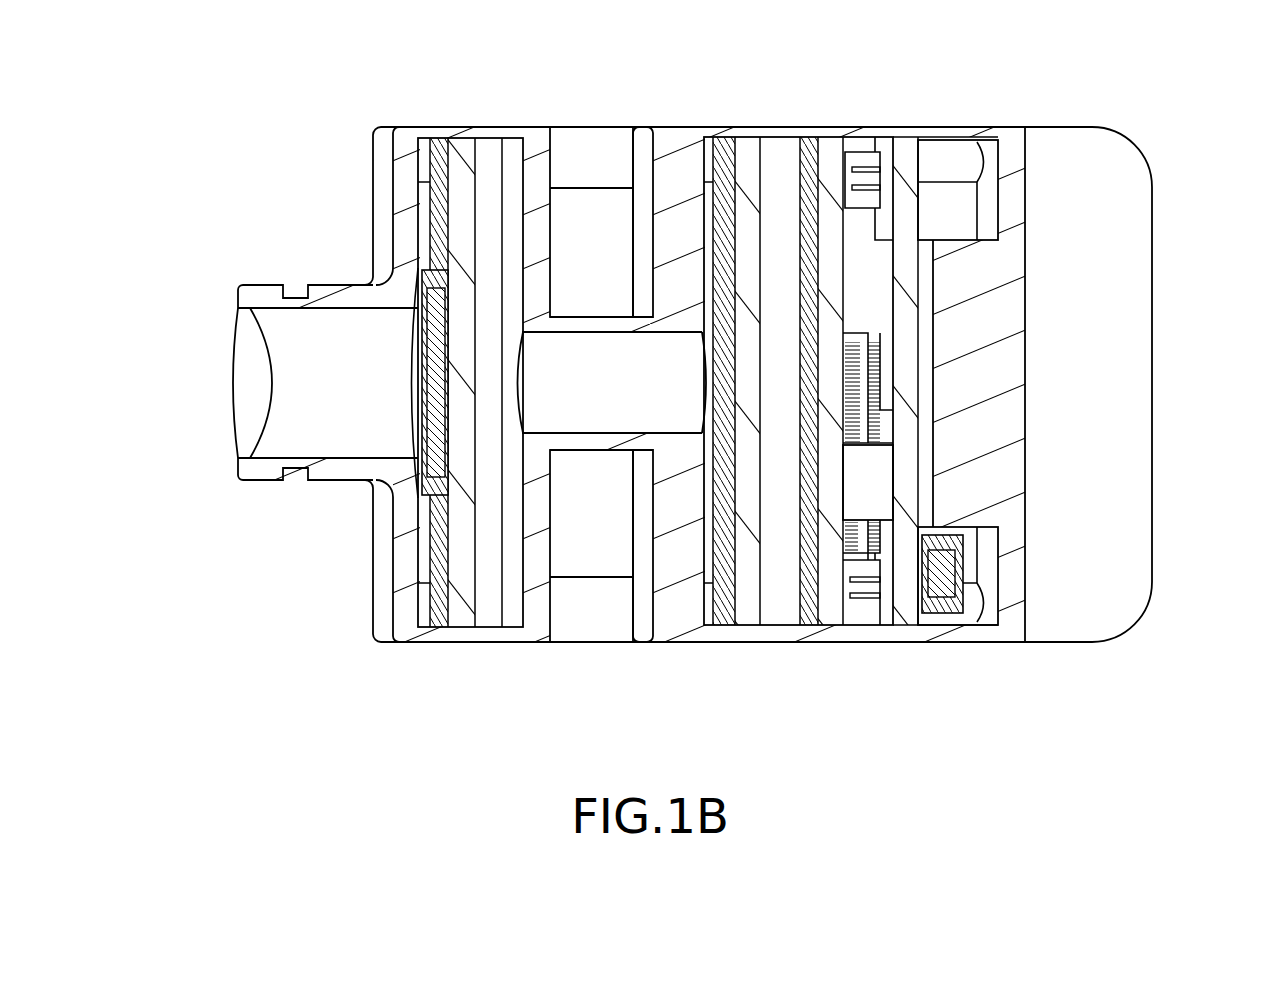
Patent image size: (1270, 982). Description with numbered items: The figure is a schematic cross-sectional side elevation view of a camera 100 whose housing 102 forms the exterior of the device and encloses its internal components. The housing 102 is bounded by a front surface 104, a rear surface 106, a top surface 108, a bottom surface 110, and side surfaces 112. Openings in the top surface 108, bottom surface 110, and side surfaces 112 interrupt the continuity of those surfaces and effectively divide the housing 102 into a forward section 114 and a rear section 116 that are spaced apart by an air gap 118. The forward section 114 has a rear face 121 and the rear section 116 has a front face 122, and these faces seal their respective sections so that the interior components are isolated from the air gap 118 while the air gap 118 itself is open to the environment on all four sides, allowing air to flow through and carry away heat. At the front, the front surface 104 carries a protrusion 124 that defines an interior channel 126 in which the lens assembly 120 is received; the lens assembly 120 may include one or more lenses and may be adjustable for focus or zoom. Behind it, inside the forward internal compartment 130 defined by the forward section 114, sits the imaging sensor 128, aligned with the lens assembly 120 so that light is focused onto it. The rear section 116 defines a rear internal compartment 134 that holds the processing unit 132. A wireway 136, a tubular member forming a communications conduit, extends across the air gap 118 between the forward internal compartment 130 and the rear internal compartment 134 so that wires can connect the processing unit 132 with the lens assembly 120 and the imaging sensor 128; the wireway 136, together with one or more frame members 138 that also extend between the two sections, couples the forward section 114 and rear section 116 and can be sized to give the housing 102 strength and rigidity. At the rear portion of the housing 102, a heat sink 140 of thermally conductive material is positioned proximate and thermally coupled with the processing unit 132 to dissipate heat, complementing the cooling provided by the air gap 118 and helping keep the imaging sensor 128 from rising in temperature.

The camera 100 is at (701, 396).
The housing 102 is at (726, 668).
The front surface 104 is at (372, 540).
The rear surface 106 is at (1153, 322).
The top surface 108 is at (758, 133).
The bottom surface 110 is at (475, 632).
The side surfaces 112 is at (1059, 148).
The forward section 114 is at (508, 676).
The rear section 116 is at (960, 685).
The air gap 118 is at (607, 545).
The lens assembly 120 is at (243, 405).
The rear face 121 is at (551, 552).
The front face 122 is at (628, 275).
The protrusion 124 is at (345, 292).
The interior channel 126 is at (342, 438).
The imaging sensor 128 is at (442, 385).
The forward internal compartment 130 is at (437, 150).
The processing unit 132 is at (894, 468).
The rear internal compartment 134 is at (858, 150).
The wireway 136 is at (655, 375).
The frame members 138 is at (627, 132).
The heat sink 140 is at (1113, 126).